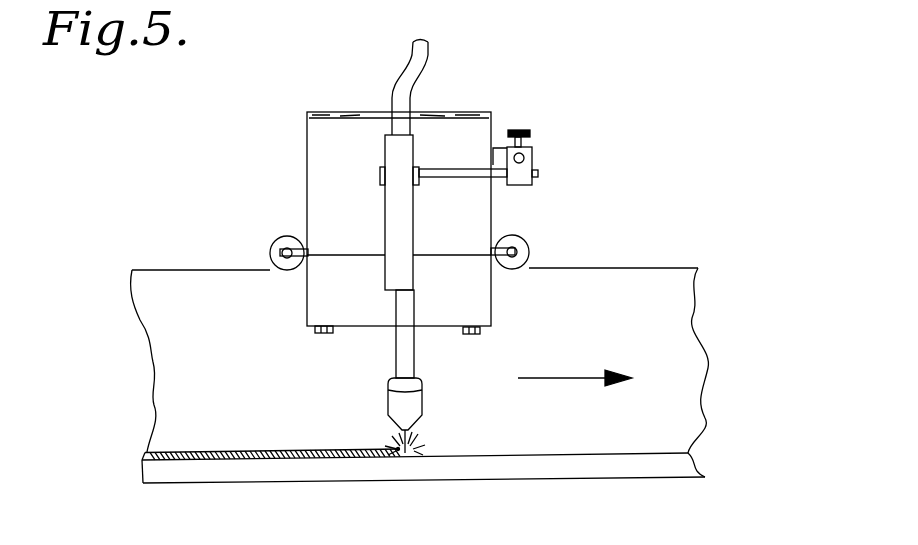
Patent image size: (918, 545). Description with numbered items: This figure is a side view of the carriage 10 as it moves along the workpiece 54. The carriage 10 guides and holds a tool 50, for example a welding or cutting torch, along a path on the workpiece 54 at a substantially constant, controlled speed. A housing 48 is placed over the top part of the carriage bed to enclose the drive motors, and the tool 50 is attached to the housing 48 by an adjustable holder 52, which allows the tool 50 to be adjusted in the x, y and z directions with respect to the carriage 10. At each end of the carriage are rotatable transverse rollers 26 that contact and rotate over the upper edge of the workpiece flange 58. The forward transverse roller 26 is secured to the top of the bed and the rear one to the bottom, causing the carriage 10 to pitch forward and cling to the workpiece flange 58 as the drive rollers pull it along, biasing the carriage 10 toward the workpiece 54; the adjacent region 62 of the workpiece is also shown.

The carriage 10 is at (415, 245).
The housing 48 is at (368, 135).
The tool 50 is at (395, 198).
The adjustable holder 52 is at (533, 157).
The transverse rollers 26 is at (283, 240).
The workpiece flange 58 is at (658, 322).
The workpiece plate 62 is at (272, 383).
The workpiece 54 is at (645, 453).